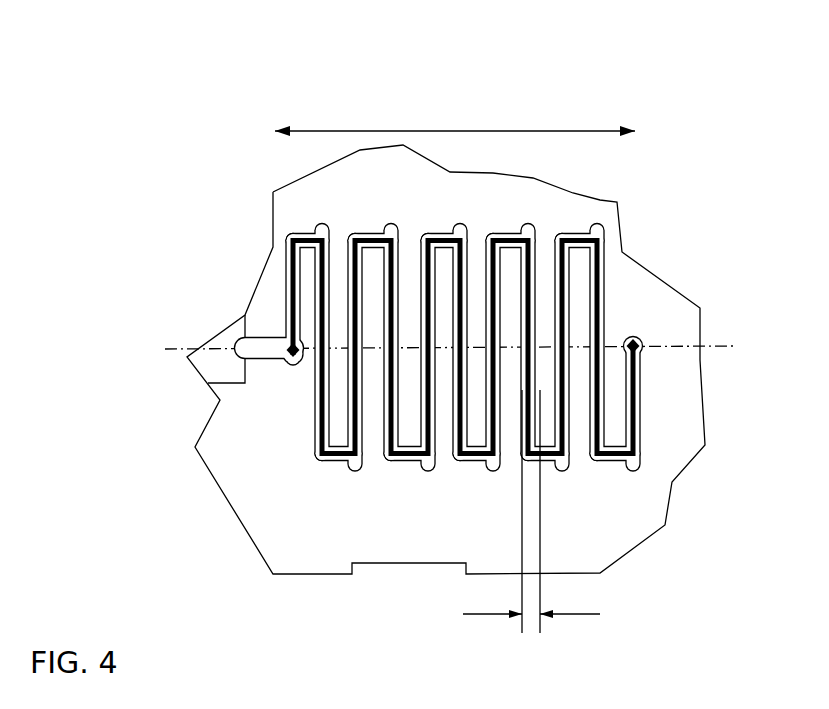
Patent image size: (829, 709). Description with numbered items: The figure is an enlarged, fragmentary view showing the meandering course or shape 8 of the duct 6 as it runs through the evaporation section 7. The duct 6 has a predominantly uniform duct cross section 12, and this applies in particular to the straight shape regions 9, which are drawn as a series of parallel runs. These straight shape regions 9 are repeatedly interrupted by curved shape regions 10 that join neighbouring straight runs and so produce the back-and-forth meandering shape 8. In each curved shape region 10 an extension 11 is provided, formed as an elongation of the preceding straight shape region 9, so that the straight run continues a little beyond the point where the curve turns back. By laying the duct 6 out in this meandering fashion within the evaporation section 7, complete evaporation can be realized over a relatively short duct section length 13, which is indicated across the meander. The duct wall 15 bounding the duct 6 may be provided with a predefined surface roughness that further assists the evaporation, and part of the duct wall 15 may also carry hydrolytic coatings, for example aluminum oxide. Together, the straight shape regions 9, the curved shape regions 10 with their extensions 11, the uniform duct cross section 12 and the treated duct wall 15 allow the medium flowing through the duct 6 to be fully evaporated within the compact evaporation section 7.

The duct 6 is at (603, 288).
The evaporation section 7 is at (545, 131).
The meandering course 8 is at (590, 400).
The straight shape region 9 is at (317, 403).
The curved shape region 10 is at (317, 452).
The extension 11 is at (320, 228).
The duct cross section 12 is at (527, 618).
The duct section length 13 is at (597, 226).
The duct wall 15 is at (283, 320).